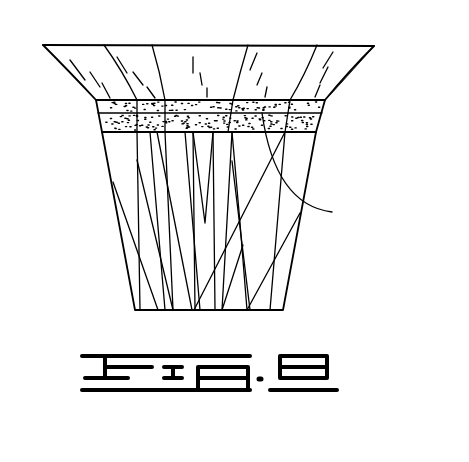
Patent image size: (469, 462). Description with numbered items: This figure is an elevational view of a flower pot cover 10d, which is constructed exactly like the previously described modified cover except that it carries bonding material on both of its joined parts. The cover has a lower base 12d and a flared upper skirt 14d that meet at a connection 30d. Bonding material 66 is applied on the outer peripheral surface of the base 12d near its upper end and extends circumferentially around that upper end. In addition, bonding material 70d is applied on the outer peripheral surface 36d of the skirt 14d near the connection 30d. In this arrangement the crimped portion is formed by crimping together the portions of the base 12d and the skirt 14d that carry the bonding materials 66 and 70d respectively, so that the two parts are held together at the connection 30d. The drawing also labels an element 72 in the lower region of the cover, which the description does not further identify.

The flower pot cover 10d is at (338, 187).
The base 12d is at (280, 258).
The skirt 14d is at (355, 53).
The connection 30d is at (320, 111).
The outer peripheral surface 36d is at (348, 78).
The bonding material 66 is at (103, 107).
The bonding material 70d is at (318, 134).
The strand 72 is at (313, 170).